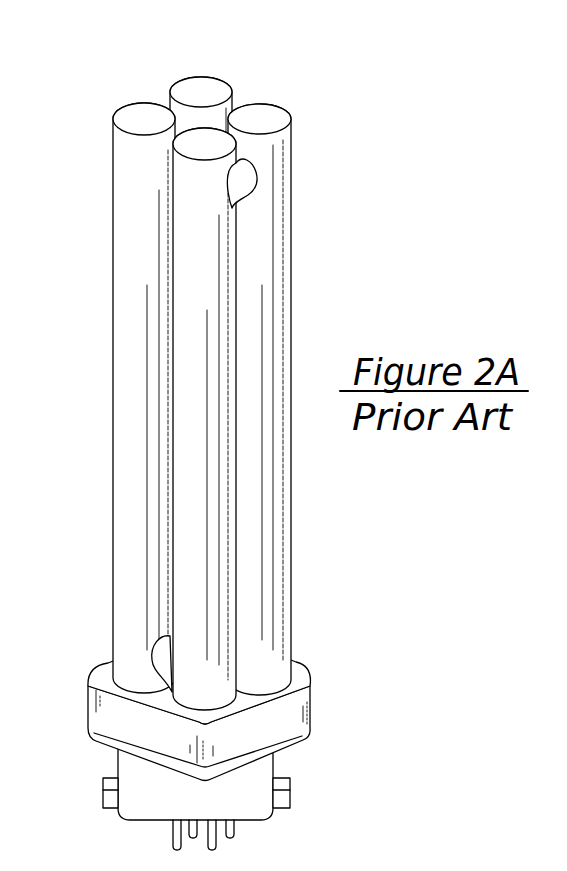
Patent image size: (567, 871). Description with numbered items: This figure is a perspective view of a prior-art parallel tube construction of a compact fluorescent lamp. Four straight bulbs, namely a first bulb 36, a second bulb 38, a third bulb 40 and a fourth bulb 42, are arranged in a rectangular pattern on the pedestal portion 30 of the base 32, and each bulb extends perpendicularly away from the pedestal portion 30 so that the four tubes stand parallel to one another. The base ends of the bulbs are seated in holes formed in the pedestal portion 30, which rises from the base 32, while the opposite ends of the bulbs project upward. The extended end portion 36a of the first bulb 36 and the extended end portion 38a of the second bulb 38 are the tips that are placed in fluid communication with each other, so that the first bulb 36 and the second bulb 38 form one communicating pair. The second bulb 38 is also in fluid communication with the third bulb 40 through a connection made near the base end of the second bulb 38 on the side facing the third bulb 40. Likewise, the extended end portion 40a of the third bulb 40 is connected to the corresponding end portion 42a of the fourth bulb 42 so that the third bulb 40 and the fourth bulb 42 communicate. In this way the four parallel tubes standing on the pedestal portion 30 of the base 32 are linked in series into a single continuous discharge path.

The pedestal portion 30 is at (302, 698).
The base 32 is at (306, 756).
The first bulb 36 is at (233, 100).
The extended end portion of the first bulb 36a is at (205, 88).
The second bulb 38 is at (112, 205).
The extended end portion of the second bulb 38a is at (133, 115).
The third bulb 40 is at (185, 268).
The extended end portion of the third bulb 40a is at (192, 145).
The fourth bulb 42 is at (262, 262).
The extended end portion of the fourth bulb 42a is at (275, 117).